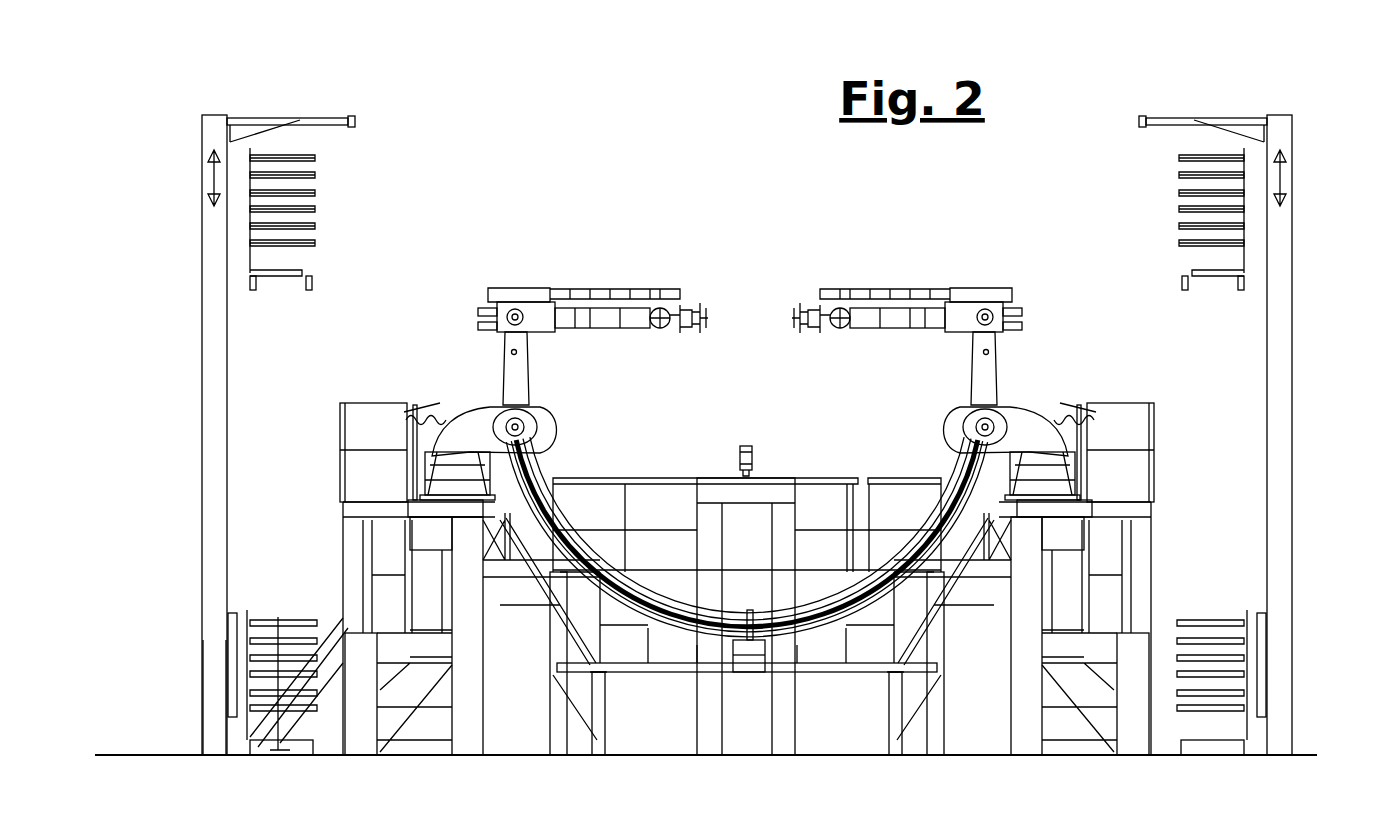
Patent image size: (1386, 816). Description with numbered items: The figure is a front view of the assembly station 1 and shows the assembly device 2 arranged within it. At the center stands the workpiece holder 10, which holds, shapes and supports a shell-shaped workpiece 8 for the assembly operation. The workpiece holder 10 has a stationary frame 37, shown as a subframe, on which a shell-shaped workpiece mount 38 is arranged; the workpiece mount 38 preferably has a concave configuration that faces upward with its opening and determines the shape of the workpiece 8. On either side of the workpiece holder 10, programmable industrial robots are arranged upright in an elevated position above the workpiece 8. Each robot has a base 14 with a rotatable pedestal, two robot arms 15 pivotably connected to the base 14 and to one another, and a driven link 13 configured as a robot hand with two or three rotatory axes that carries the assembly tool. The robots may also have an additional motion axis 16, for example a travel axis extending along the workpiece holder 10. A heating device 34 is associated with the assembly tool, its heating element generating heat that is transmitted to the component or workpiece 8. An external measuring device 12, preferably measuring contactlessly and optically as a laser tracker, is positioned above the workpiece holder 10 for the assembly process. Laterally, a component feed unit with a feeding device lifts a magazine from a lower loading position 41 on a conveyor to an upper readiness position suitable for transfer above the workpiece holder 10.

The assembly station 1 is at (564, 333).
The assembly device 2 is at (564, 333).
The workpiece 8 is at (520, 455).
The workpiece holder 10 is at (747, 626).
The external measuring device 12 is at (738, 448).
The driven link 13 is at (836, 330).
The base 14 is at (1052, 482).
The robot arm 15 is at (983, 367).
The additional motion axis 16 is at (1062, 507).
The heating device 34 is at (955, 290).
The frame 37 is at (713, 707).
The workpiece mount 38 is at (810, 640).
The lower loading position 41 is at (212, 684).